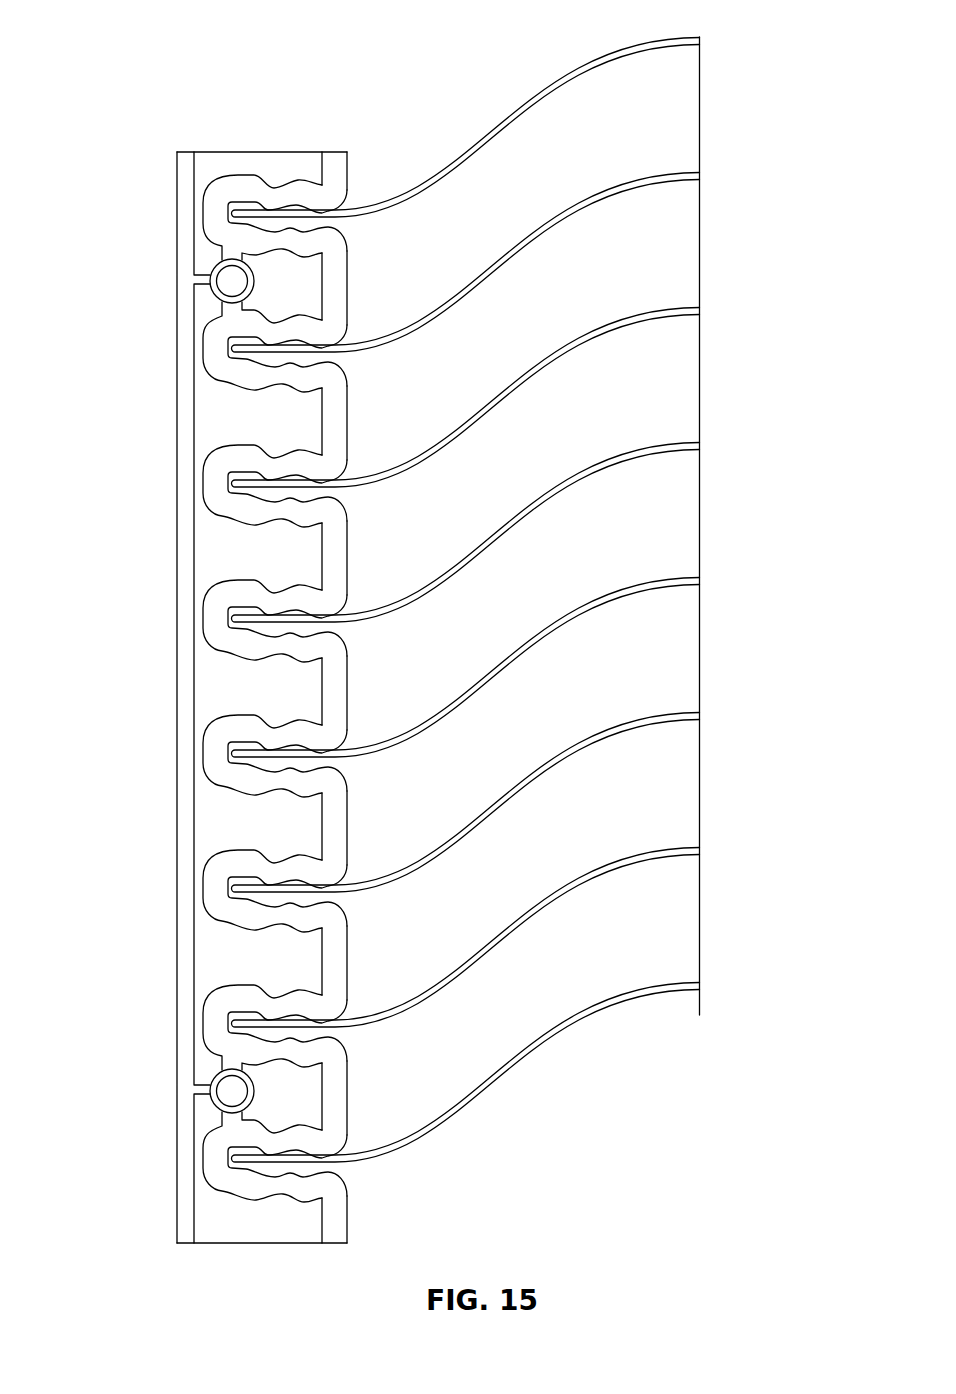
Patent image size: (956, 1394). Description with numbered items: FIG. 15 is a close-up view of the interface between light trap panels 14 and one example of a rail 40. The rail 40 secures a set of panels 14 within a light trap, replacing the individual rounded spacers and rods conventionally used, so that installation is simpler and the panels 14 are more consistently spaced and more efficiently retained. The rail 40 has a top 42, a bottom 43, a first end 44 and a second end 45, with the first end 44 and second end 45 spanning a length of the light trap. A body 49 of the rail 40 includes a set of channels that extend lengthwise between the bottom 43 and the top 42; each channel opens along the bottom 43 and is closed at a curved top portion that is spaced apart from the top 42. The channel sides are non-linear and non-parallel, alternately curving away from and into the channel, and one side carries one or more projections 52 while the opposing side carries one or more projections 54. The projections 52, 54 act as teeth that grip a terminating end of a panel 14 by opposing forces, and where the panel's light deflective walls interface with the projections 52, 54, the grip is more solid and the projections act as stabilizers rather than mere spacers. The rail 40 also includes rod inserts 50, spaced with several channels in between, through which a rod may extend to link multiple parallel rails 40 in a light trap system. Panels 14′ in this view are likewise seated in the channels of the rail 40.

The rail 40 is at (147, 75).
The second end 45 is at (267, 152).
The top 42 is at (177, 452).
The first end 44 is at (265, 1245).
The bottom 43 is at (347, 1213).
The body 49 is at (233, 810).
The rod insert 50 is at (232, 280).
The projection 52 is at (265, 1023).
The projection 54 is at (282, 1170).
The panel 14 is at (677, 173).
The blade (alternate) 14′ is at (227, 622).